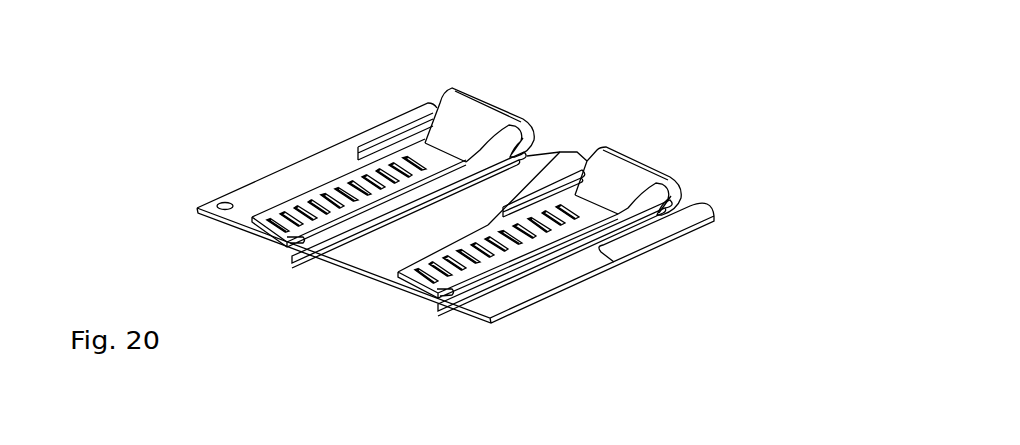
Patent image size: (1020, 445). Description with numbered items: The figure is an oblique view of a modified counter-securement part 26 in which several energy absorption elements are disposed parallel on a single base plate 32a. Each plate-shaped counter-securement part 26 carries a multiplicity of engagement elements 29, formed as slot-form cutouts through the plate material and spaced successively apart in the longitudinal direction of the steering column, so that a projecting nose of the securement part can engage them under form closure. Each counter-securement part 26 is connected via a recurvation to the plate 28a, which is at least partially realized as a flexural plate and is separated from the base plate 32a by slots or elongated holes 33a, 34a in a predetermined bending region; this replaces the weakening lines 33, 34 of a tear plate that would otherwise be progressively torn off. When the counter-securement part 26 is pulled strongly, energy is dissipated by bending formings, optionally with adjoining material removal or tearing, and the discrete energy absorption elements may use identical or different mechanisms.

The counter-securement part 26 is at (323, 180).
The engagement elements 29 is at (400, 158).
The weakening line 33 is at (307, 252).
The slot or elongated hole 33a is at (526, 151).
The weakening line 34 is at (227, 223).
The slot or elongated hole 34a is at (420, 125).
The plate 28a is at (620, 238).
The base plate 32a is at (660, 276).